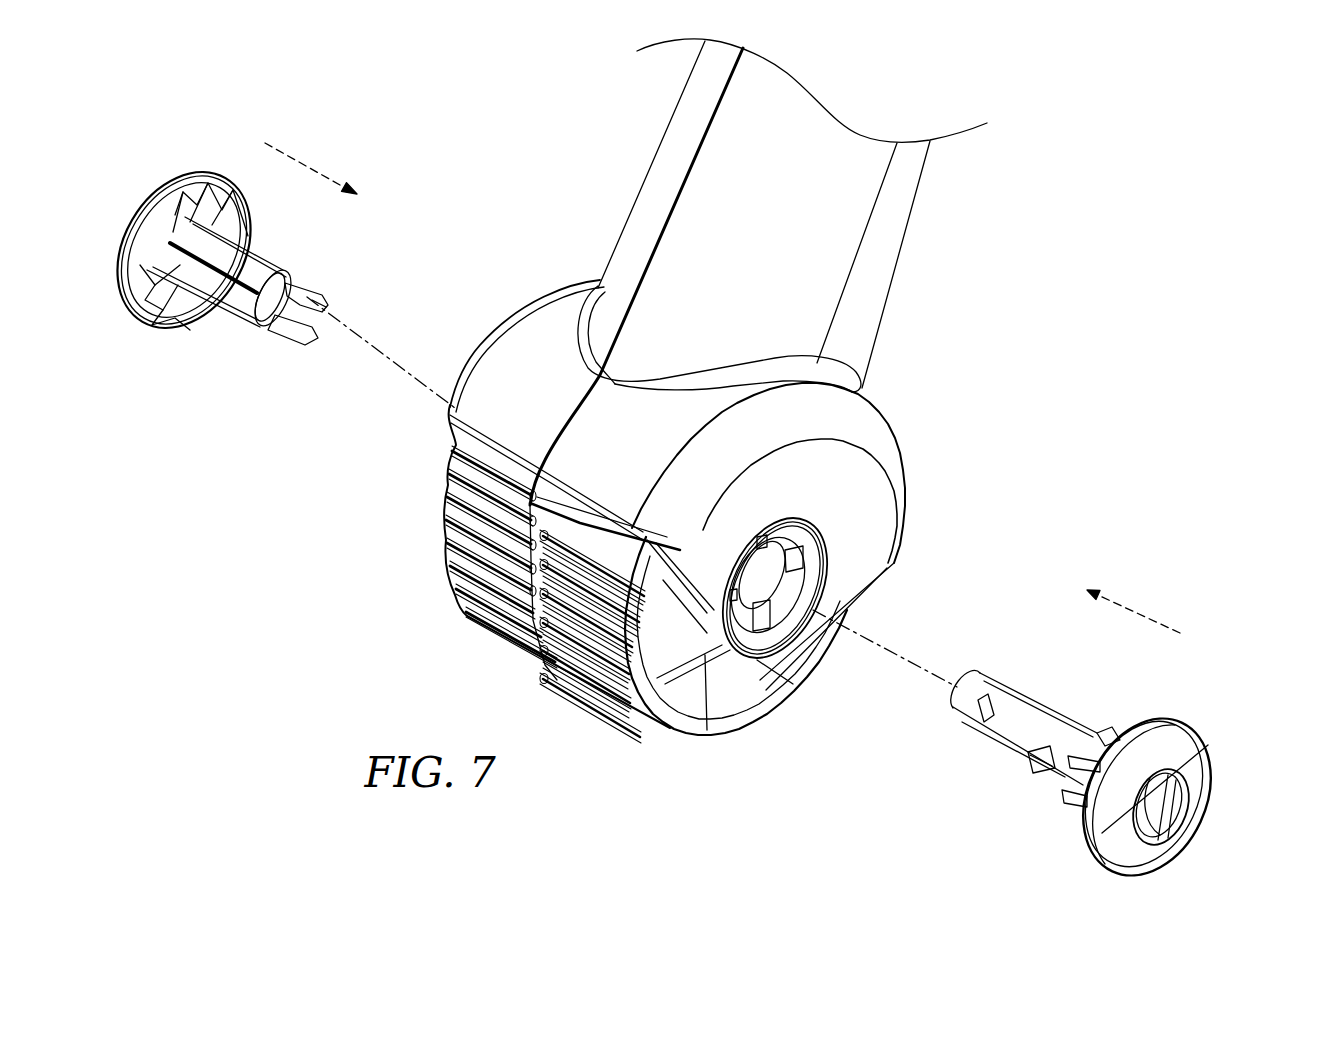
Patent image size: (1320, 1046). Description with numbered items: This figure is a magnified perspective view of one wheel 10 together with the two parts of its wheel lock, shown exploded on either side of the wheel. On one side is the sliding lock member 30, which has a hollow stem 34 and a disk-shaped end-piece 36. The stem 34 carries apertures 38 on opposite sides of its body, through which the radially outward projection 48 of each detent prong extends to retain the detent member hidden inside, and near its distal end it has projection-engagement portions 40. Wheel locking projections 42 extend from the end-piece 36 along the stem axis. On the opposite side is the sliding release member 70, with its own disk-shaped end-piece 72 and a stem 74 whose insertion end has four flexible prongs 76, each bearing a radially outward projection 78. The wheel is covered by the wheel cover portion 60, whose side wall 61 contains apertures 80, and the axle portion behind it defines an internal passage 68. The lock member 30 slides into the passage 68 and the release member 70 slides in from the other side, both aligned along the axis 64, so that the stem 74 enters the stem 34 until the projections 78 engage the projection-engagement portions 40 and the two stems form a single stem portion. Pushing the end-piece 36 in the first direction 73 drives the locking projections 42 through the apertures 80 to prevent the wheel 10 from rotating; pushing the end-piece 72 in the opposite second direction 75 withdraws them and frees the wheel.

The wheel 10 is at (503, 650).
The sliding lock member 30 is at (1082, 766).
The stem 34 is at (1037, 723).
The end-piece 36 is at (1193, 753).
The apertures 38 is at (1043, 773).
The projection-engagement portions 40 is at (977, 703).
The wheel locking projections 42 is at (1103, 727).
The projection 48 is at (1030, 763).
The wheel cover portion 60 is at (820, 400).
The side wall 61 is at (837, 473).
The axis 64 is at (393, 373).
The internal passage 68 is at (762, 571).
The sliding release member 70 is at (249, 276).
The end-piece 72 is at (183, 182).
The first direction 73 is at (1165, 630).
The stem 74 is at (247, 260).
The insertion direction 75 is at (297, 161).
The flexible prongs 76 is at (280, 327).
The projection 78 is at (327, 307).
The apertures 80 is at (800, 557).